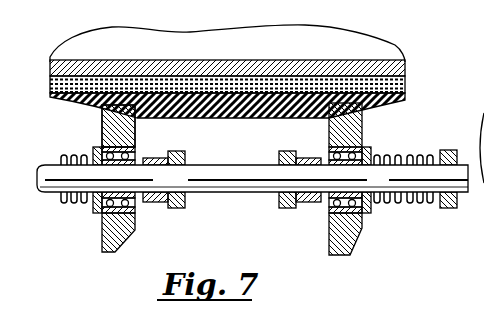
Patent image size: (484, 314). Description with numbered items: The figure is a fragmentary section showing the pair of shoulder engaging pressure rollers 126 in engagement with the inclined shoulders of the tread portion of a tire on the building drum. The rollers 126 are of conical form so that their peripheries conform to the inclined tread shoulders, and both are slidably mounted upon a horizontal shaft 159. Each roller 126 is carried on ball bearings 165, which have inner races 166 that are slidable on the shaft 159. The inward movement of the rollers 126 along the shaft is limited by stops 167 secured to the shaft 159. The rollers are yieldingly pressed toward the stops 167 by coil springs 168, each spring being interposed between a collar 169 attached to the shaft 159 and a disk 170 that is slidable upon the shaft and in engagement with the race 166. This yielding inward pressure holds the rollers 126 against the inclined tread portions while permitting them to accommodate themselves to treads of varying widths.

The shoulder engaging pressure rollers 126 is at (136, 225).
The horizontal shaft 159 is at (232, 193).
The ball bearings 165 is at (136, 152).
The inner races 166 is at (143, 156).
The stops 167 is at (186, 207).
The coil springs 168 is at (84, 206).
The collars 169 is at (449, 150).
The disks 170 is at (90, 146).